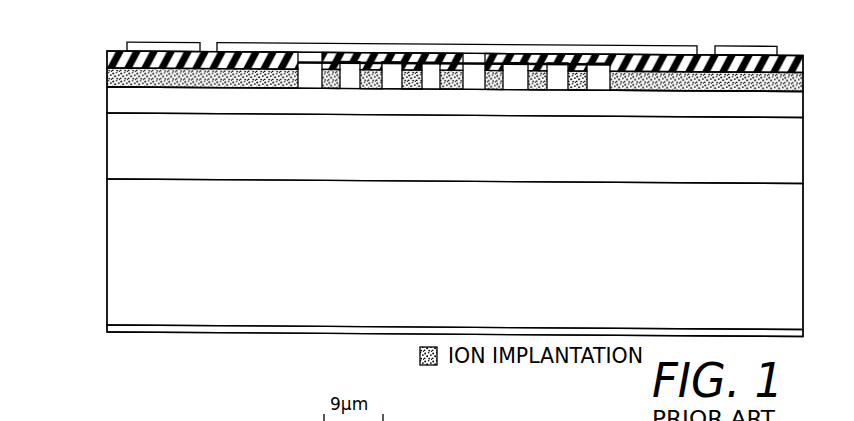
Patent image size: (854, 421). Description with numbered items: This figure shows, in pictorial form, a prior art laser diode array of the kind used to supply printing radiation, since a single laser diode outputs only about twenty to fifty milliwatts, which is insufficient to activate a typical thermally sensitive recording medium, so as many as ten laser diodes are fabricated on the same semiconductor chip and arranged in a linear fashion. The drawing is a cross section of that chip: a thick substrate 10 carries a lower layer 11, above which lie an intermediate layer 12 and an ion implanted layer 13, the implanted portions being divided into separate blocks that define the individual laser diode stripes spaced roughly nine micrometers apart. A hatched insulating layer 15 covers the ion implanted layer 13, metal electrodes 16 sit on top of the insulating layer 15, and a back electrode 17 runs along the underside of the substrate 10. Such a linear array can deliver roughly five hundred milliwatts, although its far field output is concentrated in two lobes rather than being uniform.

The substrate 10 is at (107, 268).
The buffer layer 11 is at (107, 145).
The epitaxial active layer 12 is at (107, 101).
The ion implanted layer 13 is at (107, 78).
The insulating layer 15 is at (107, 61).
The metal electrode 16 is at (147, 41).
The back electrode 17 is at (175, 334).